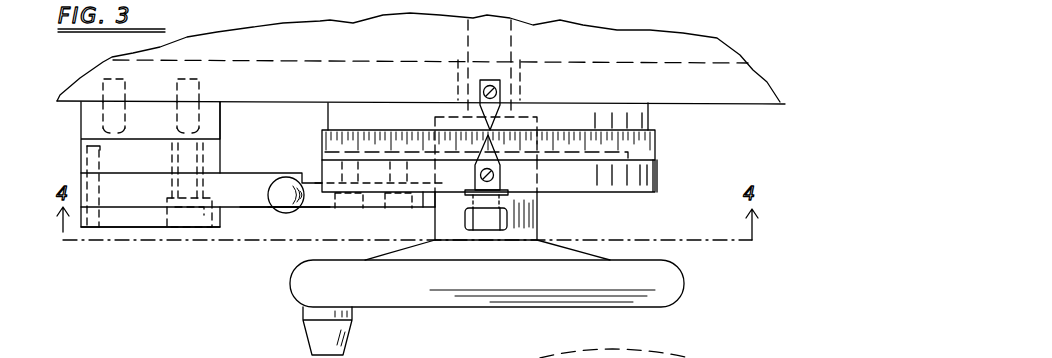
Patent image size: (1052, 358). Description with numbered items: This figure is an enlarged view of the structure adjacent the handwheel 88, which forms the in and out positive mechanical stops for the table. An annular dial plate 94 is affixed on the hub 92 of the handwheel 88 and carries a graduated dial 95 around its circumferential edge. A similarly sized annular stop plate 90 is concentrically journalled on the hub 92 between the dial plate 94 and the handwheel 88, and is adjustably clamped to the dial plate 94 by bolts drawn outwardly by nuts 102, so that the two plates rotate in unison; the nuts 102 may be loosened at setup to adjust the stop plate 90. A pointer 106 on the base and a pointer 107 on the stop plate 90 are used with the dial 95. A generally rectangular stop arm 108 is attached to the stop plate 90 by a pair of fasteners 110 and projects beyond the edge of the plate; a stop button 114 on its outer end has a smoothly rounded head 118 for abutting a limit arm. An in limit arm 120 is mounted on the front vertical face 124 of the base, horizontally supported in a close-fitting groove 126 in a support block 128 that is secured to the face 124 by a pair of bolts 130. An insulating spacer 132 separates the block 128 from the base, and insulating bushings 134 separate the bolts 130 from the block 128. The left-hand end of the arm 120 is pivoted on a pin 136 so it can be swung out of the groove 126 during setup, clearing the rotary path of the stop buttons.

The handwheel 88 is at (677, 268).
The stop plate 90 is at (657, 178).
The hub 92 is at (508, 217).
The dial plate 94 is at (658, 152).
The graduated dial 95 is at (655, 128).
The nuts 102 is at (538, 218).
The pointer 106 is at (500, 97).
The pointer 107 is at (500, 170).
The stop arm 108 is at (315, 207).
The fasteners 110 is at (399, 223).
The stop button 114 is at (280, 211).
The head 118 is at (277, 192).
The in limit arm 120 is at (242, 172).
The front vertical face 124 is at (747, 107).
The groove 126 is at (153, 201).
The support block 128 is at (107, 230).
The bolts 130 is at (165, 133).
The insulating spacer 132 is at (222, 117).
The insulating bushings 134 is at (207, 230).
The pin 136 is at (80, 163).